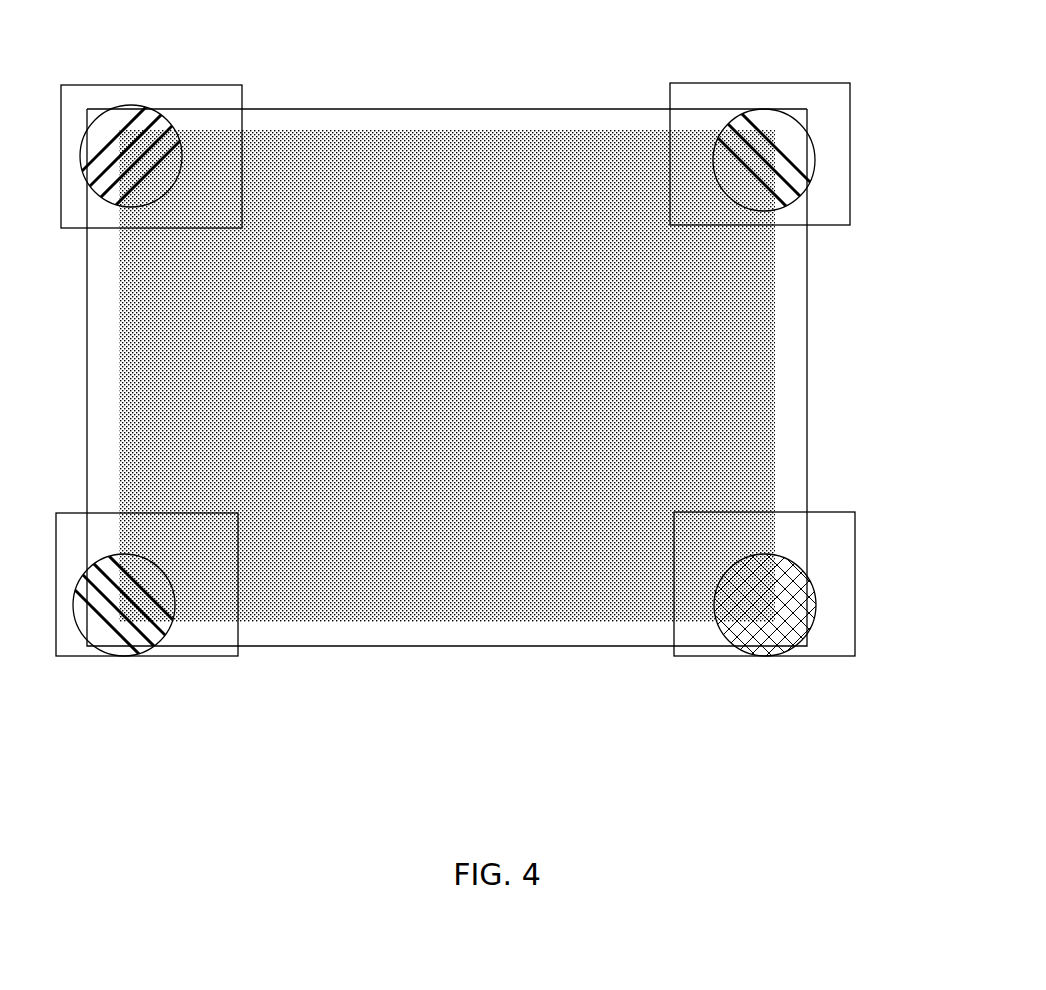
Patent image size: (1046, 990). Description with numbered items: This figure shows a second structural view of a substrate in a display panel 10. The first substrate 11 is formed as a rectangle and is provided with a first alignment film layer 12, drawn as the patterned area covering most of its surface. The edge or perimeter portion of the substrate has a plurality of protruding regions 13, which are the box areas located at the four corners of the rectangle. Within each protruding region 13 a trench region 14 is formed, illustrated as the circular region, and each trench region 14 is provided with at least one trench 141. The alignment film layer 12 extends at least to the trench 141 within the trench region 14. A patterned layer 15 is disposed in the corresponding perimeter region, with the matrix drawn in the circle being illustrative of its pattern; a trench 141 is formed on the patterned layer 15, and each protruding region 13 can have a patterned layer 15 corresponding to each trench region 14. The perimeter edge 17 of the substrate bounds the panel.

The display panel 10 is at (487, 423).
The first substrate 11 is at (807, 646).
The first alignment film layer 12 is at (776, 287).
The protruding region 13 is at (850, 225).
The trench region 14 is at (810, 133).
The trench 141 is at (813, 166).
The patterned layer 15 is at (765, 605).
The perimeter edge 17 is at (465, 120).